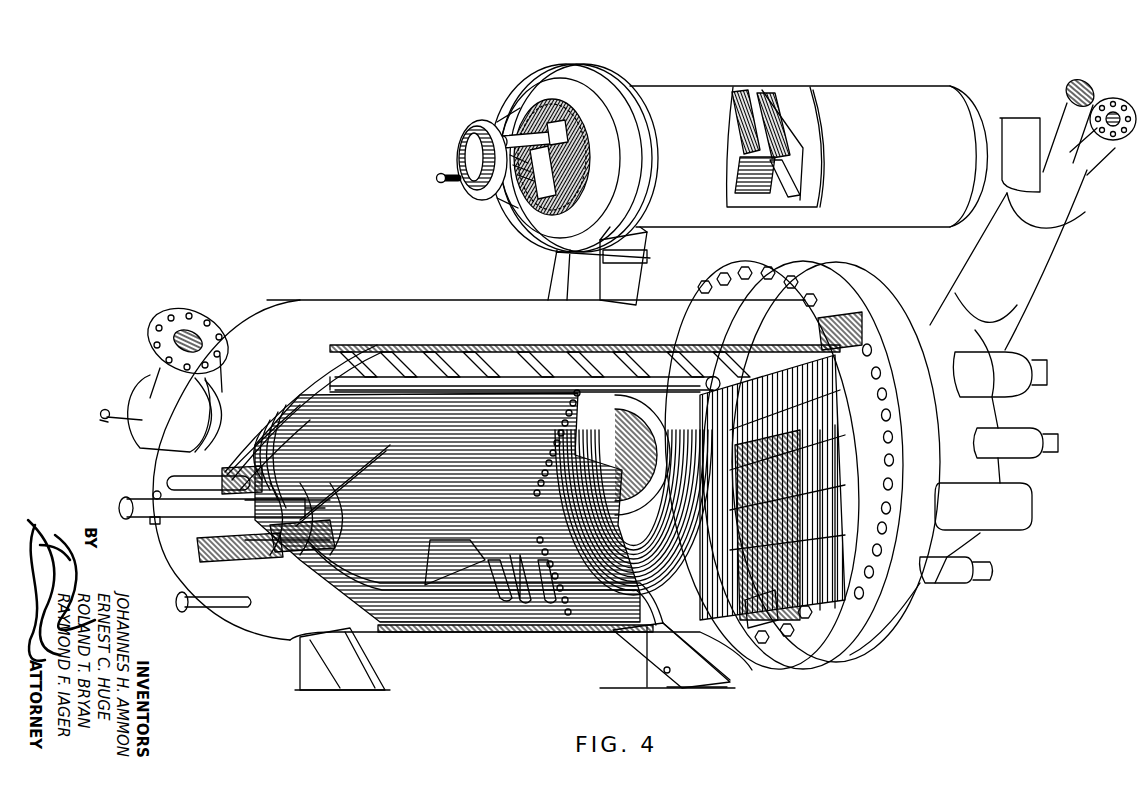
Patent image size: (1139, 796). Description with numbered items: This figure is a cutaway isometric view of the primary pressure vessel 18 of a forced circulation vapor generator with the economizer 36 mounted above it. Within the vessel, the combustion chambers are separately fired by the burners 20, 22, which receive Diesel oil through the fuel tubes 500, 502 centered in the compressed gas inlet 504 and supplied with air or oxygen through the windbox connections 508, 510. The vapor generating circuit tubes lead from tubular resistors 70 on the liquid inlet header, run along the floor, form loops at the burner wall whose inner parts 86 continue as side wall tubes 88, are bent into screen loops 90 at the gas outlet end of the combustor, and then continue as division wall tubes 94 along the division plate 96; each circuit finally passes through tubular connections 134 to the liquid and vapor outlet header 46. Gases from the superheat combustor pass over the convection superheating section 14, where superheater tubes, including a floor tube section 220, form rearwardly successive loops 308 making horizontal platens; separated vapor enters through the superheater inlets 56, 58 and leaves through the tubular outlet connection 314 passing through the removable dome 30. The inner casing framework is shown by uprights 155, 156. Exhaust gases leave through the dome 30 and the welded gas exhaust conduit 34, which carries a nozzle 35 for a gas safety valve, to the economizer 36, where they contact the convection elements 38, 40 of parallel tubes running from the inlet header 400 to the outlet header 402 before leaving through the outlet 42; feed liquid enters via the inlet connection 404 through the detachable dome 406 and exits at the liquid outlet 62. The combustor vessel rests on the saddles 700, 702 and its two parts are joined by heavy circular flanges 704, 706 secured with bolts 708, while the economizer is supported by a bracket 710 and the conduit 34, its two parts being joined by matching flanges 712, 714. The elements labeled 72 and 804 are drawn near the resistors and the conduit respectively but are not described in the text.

The convection superheating section 14 is at (667, 443).
The primary pressure vessel 18 is at (402, 343).
The burner 20 is at (132, 371).
The burner 22 is at (154, 473).
The removable dome or head 30 is at (997, 418).
The gas exhaust conduit 34 is at (1032, 268).
The nozzle 35 is at (1097, 148).
The economizer 36 is at (856, 76).
The economizer convection elements 38 is at (742, 88).
The economizer convection elements 40 is at (528, 182).
The gas outlet 42 is at (463, 143).
The liquid and vapor outlet header 46 is at (728, 367).
The superheater inlet 56 is at (1057, 443).
The superheater inlet 58 is at (987, 573).
The economizer liquid outlet 62 is at (523, 118).
The tubular resistors 70 is at (523, 600).
The support rod 72 is at (537, 570).
The loop 86 is at (328, 568).
The side wall tubes 88 is at (430, 563).
The screen loops 90 is at (610, 563).
The combustor division wall tubes 94 is at (495, 420).
The division plate 96 is at (313, 410).
The tubular connections 134 is at (840, 385).
The upright 155 is at (647, 630).
The upright 156 is at (818, 498).
The floor tube section 220 is at (565, 613).
The superheater loops or return bends 308 is at (752, 605).
The tubular outlet connection 314 is at (1013, 508).
The economizer inlet header 400 is at (528, 130).
The economizer outlet header 402 is at (567, 113).
The inlet connection 404 is at (437, 177).
The detachable dome or end structure 406 is at (498, 105).
The fuel tube 500 is at (118, 517).
The fuel tube 502 is at (107, 417).
The compressed gas inlet 504 is at (258, 507).
The gas or windbox connection 508 is at (203, 567).
The gas or windbox connection 510 is at (185, 312).
The saddle or support 700 is at (350, 650).
The saddle or support 702 is at (705, 670).
The heavy circular flange 704 is at (788, 267).
The heavy circular flange 706 is at (833, 268).
The bolts 708 is at (718, 282).
The bracket 710 is at (573, 271).
The matching flange 712 is at (640, 146).
The matching flange 714 is at (622, 128).
The outlet pipe 804 is at (1060, 97).